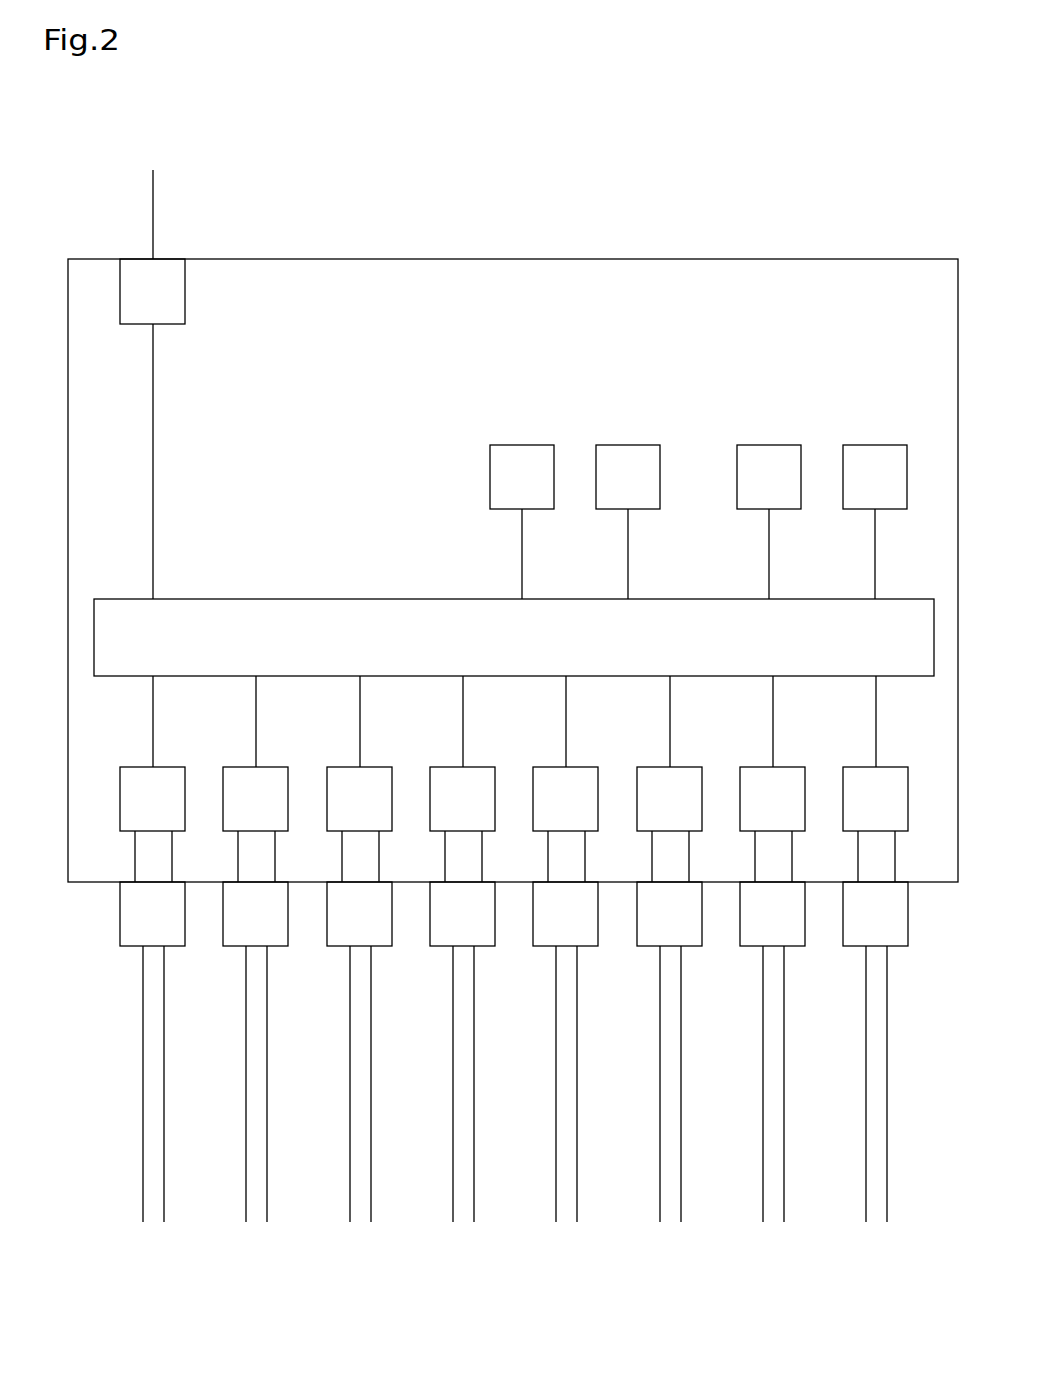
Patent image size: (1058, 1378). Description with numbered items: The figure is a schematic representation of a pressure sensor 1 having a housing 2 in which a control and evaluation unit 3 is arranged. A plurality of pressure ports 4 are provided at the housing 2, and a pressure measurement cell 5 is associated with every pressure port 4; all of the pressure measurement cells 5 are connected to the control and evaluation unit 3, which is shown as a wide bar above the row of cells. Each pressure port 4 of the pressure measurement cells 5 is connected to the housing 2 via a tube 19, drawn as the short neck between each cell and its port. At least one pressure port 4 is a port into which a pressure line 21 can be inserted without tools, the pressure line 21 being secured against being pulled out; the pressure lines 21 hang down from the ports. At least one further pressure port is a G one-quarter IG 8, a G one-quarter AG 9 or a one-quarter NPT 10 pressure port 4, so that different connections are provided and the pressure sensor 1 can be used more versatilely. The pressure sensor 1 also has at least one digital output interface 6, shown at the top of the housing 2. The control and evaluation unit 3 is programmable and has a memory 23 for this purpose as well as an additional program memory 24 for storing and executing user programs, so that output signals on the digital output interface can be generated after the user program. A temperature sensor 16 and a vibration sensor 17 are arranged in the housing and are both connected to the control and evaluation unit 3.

The pressure sensor 1 is at (745, 70).
The housing 2 is at (817, 259).
The control and evaluation unit 3 is at (290, 599).
The pressure port 4 is at (185, 930).
The pressure measurement cell 5 is at (170, 767).
The digital output interface 6 is at (185, 295).
The G ¼ IG pressure port 8 is at (183, 965).
The G ¼ AG pressure port 9 is at (286, 965).
The ¼ NPT pressure port 10 is at (390, 965).
The temperature sensor 16 is at (510, 445).
The vibration sensor 17 is at (614, 445).
The tube 19 is at (172, 843).
The pressure line 21 is at (164, 1098).
The memory 23 is at (757, 445).
The additional program memory 24 is at (863, 445).